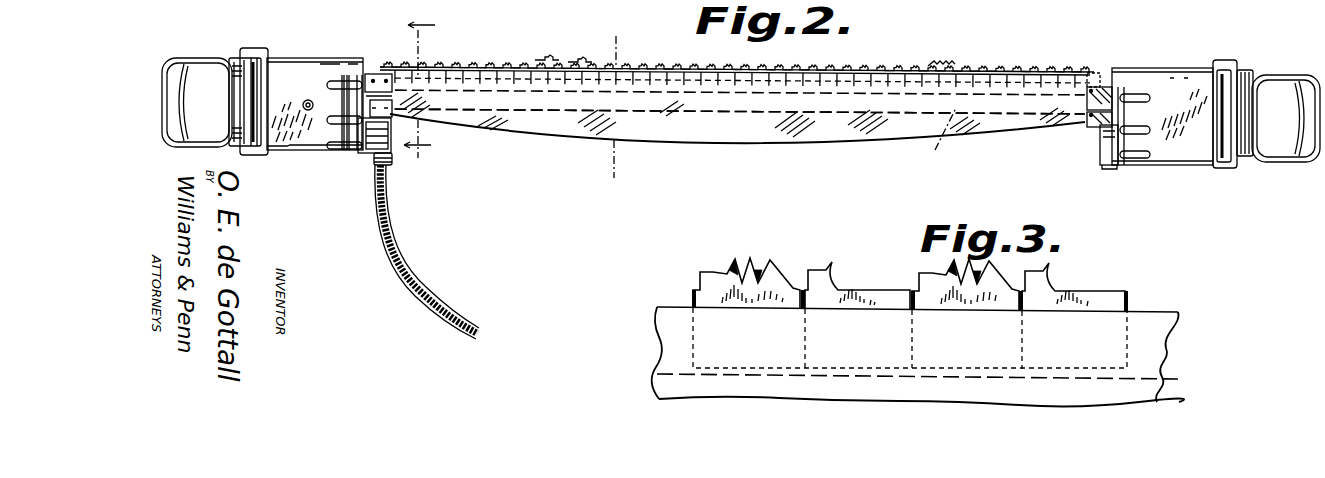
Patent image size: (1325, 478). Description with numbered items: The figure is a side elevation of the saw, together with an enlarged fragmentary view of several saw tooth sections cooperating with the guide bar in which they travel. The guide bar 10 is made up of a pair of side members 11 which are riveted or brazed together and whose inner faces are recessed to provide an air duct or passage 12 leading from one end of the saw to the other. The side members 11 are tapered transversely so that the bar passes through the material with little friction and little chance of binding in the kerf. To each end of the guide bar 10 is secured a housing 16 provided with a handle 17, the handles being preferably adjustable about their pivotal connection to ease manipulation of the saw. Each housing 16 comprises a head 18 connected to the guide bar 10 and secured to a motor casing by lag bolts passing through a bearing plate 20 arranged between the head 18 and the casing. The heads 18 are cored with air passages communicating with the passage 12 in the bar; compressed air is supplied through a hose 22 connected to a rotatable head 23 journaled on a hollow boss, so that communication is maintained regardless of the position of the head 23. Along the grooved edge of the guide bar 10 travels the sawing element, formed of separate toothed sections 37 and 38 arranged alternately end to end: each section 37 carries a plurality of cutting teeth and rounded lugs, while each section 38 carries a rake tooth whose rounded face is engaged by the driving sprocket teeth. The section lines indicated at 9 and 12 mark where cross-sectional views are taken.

In FIG. 2, the section line 9- 9 is at (419, 87).
In FIG. 2, the guide bar 10 is at (828, 142).
In FIG. 3, the guide bar 10 is at (1159, 367).
In FIG. 2, the side members 11 is at (744, 122).
In FIG. 3, the side members 11 is at (910, 338).
In FIG. 2, the air duct or passage 12 is at (687, 105).
In FIG. 2, the housing 16 is at (290, 82).
In FIG. 2, the handles 17 is at (252, 103).
In FIG. 2, the head 18 is at (391, 79).
In FIG. 2, the bearing plate 20 is at (357, 152).
In FIG. 2, the hose 22 is at (436, 306).
In FIG. 2, the rotatable head 23 is at (394, 150).
In FIG. 2, the toothed sections 37 is at (940, 68).
In FIG. 3, the toothed sections 37 is at (750, 258).
In FIG. 2, the toothed sections 38 is at (573, 65).
In FIG. 3, the toothed sections 38 is at (834, 280).